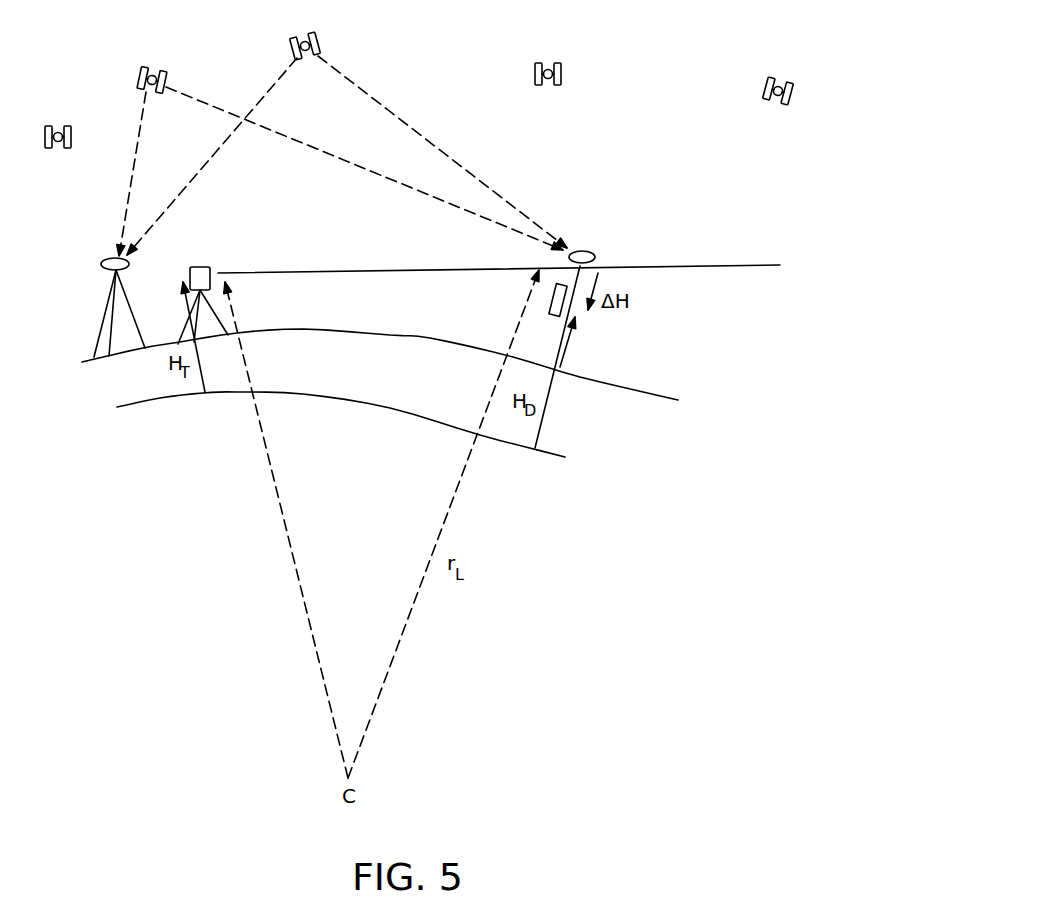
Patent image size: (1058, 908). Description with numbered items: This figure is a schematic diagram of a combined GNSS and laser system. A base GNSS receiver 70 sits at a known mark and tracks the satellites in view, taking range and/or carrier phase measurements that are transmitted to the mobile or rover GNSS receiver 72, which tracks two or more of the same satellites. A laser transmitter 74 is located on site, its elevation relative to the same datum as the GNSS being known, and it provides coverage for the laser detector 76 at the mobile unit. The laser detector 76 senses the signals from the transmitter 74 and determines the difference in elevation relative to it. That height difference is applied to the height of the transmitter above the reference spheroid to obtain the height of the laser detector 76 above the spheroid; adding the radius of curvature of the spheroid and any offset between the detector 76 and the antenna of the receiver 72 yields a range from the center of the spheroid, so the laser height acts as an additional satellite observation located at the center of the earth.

The base GNSS receiver 70 is at (101, 265).
The mobile GNSS receiver 72 is at (596, 260).
The laser transmitter 74 is at (200, 267).
The laser detector 76 is at (548, 300).